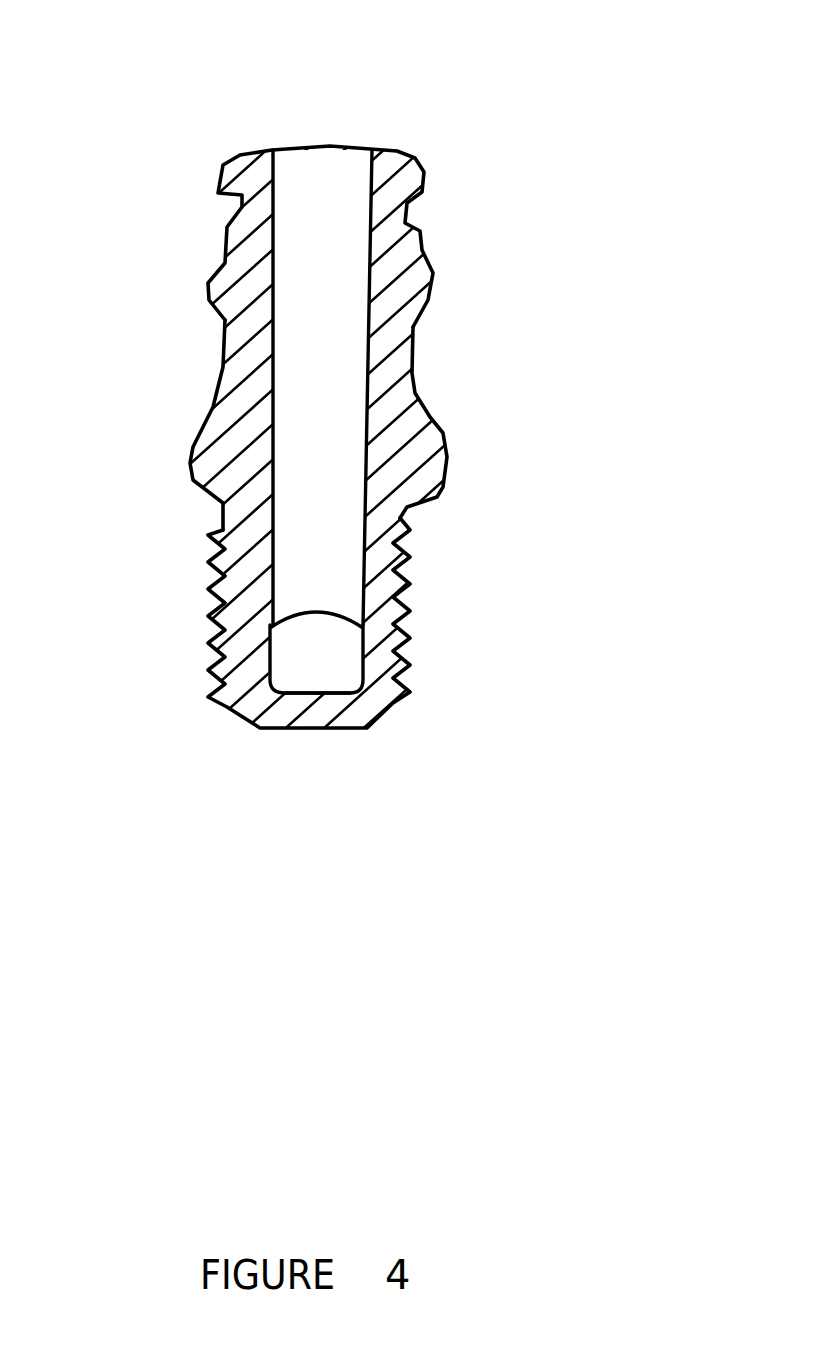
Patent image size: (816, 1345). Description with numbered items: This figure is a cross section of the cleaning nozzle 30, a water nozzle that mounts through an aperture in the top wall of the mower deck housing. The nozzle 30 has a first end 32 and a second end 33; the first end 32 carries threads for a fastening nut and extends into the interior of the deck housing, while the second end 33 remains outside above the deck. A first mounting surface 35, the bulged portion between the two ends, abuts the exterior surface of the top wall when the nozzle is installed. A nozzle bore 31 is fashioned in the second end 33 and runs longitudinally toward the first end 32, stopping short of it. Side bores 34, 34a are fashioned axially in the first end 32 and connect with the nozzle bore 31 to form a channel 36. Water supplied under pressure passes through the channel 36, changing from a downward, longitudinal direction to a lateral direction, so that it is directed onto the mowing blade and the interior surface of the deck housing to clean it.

The cleaning nozzle 30 is at (397, 481).
The nozzle bore 31 is at (328, 190).
The first end 32 is at (435, 693).
The second end 33 is at (448, 218).
The side bore 34 is at (297, 672).
The side bore 34a is at (327, 672).
The first mounting surface 35 is at (200, 505).
The channel 36 is at (320, 645).